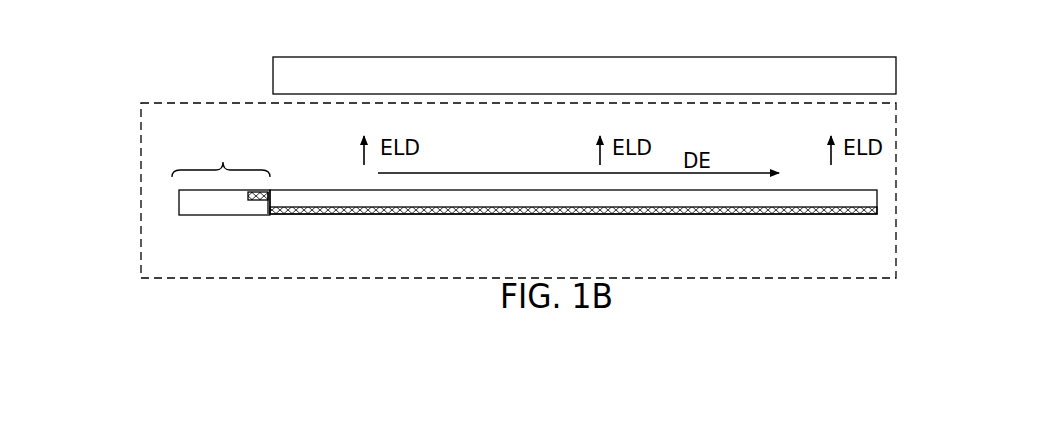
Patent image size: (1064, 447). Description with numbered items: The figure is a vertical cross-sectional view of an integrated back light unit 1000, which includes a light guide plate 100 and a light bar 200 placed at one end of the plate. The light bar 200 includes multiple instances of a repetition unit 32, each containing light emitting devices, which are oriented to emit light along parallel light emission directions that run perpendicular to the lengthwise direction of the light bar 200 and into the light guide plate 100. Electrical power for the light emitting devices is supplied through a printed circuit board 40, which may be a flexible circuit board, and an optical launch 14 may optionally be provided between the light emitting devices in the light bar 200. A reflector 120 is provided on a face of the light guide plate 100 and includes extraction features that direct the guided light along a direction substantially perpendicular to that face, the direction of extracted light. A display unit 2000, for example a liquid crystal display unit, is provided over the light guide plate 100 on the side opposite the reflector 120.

The display unit 2000 is at (605, 86).
The integrated back light unit 1000 is at (892, 192).
The light guide plate 100 is at (565, 192).
The reflector 120 is at (660, 214).
The light bar 200 is at (221, 153).
The printed circuit board 40 is at (228, 212).
The repetition unit 32 is at (250, 192).
The optical launch 14 is at (268, 206).